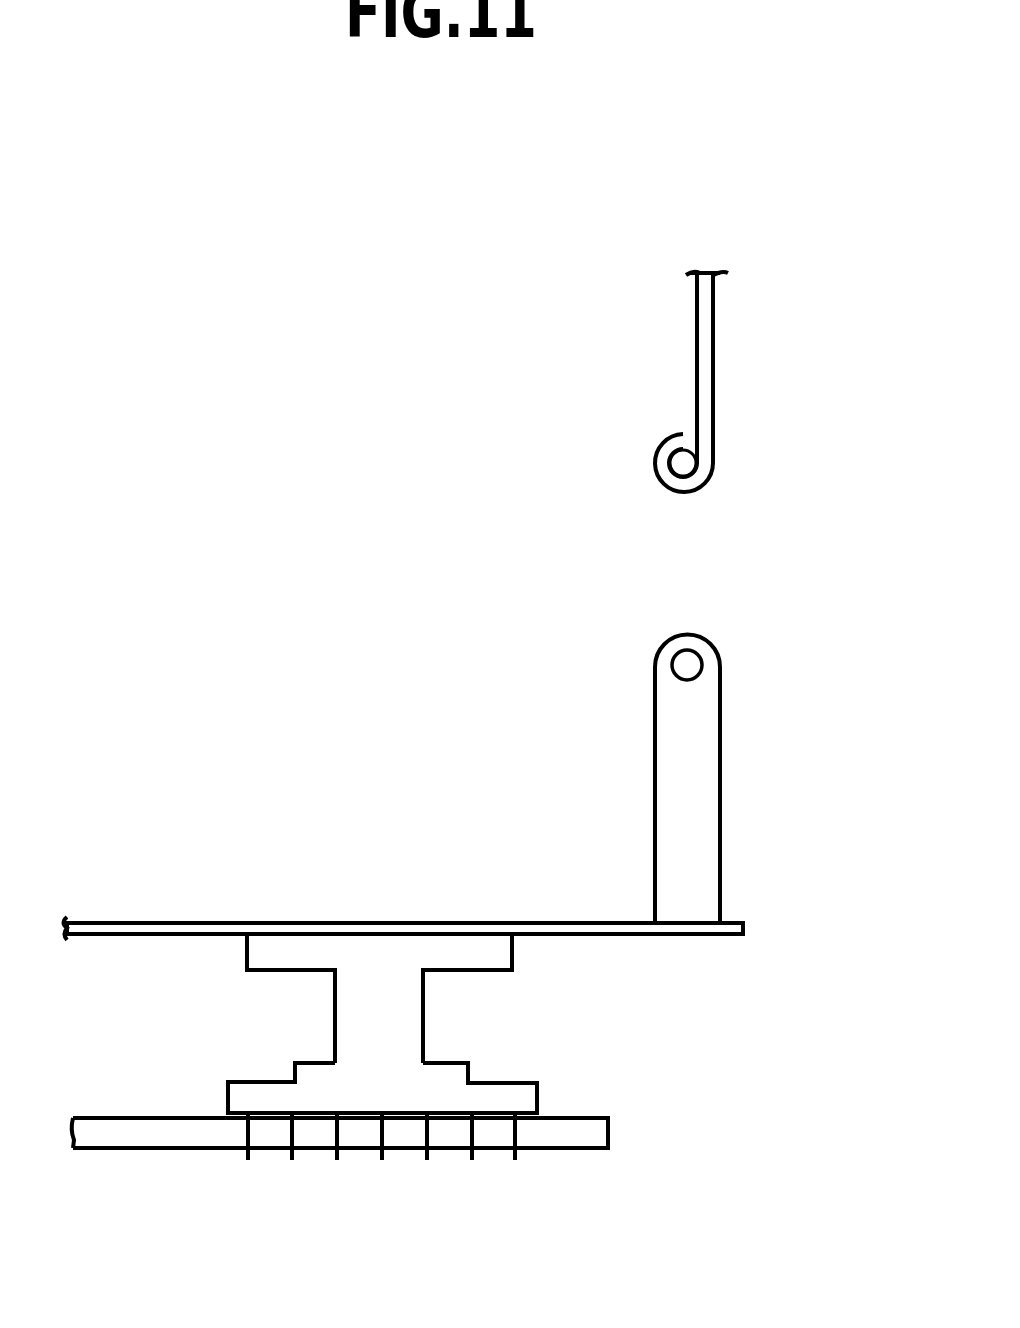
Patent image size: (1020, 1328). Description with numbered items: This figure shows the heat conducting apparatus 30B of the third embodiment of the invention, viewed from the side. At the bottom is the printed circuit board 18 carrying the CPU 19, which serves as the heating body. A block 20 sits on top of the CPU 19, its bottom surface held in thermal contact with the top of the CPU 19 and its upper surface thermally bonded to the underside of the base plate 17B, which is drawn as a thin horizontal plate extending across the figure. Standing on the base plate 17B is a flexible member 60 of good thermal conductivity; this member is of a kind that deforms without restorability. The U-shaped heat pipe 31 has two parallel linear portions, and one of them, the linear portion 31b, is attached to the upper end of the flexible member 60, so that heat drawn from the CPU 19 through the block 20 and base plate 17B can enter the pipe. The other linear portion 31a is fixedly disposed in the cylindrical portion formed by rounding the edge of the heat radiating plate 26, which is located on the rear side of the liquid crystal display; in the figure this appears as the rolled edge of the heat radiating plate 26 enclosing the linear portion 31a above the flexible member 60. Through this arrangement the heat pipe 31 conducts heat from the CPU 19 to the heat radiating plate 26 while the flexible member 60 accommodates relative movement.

The heat radiating plate 26 is at (713, 372).
The linear portion 31a is at (672, 463).
The linear portion 31b is at (672, 664).
The heat pipe 31 is at (510, 433).
The flexible member 60 is at (720, 757).
The heat conducting apparatus 30B is at (748, 822).
The base plate 17B is at (140, 922).
The block 20 is at (348, 1002).
The CPU 19 is at (503, 1095).
The printed circuit board 18 is at (580, 1135).